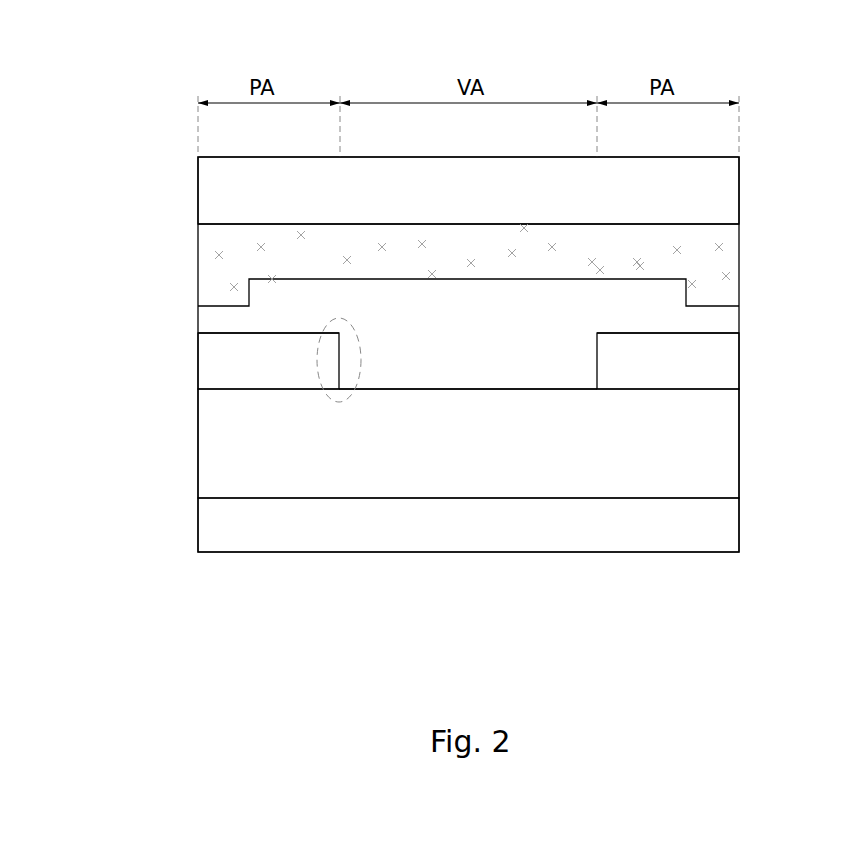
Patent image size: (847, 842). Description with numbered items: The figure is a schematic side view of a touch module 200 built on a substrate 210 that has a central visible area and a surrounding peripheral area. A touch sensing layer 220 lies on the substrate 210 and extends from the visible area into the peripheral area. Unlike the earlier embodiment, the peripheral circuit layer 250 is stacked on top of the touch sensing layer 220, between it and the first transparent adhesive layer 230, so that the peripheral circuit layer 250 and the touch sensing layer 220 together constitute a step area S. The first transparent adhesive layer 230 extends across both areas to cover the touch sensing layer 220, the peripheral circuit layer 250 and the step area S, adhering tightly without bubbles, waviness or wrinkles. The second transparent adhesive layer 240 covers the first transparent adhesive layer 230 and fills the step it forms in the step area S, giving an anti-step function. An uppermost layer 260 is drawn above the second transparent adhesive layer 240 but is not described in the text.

The touch module 200 is at (82, 57).
The substrate 210 is at (739, 524).
The touch sensing layer 220 is at (739, 448).
The first transparent adhesive layer 230 is at (739, 318).
The second transparent adhesive layer 240 is at (739, 263).
The peripheral circuit layer 250 is at (739, 371).
The cover layer 260 is at (739, 189).
The step area S is at (330, 400).